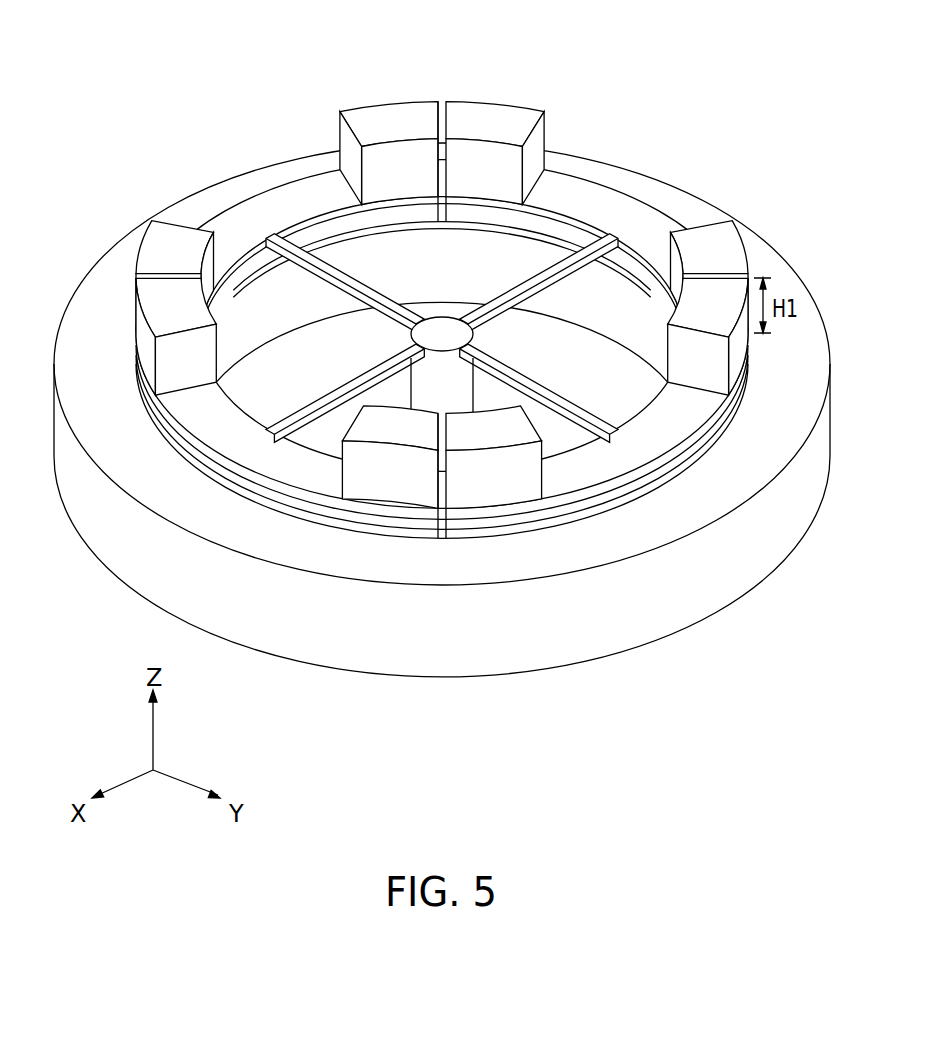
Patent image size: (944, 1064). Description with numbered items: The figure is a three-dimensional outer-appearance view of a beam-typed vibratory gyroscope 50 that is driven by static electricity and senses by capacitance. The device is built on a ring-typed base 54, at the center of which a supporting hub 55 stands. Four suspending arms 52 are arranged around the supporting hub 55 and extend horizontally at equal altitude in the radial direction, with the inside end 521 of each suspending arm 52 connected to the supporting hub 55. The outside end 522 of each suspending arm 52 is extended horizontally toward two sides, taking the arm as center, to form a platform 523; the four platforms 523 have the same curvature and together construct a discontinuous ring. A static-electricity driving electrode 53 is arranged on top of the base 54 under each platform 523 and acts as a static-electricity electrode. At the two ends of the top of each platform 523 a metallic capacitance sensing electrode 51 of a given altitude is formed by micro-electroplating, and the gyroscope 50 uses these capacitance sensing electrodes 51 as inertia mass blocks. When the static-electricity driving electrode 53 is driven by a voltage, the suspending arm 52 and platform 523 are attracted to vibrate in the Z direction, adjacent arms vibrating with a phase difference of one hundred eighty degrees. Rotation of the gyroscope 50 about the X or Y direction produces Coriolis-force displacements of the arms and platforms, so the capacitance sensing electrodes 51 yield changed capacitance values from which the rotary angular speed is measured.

The beam-typed vibratory gyroscope 50 is at (233, 116).
The capacitance sensing electrode 51 is at (743, 356).
The suspending arm 52 is at (552, 392).
The inside end 521 is at (478, 351).
The outside end 522 is at (606, 430).
The platform 523 is at (632, 455).
The static-electricity driving electrode 53 is at (578, 508).
The ring-typed base 54 is at (390, 652).
The supporting hub 55 is at (410, 335).